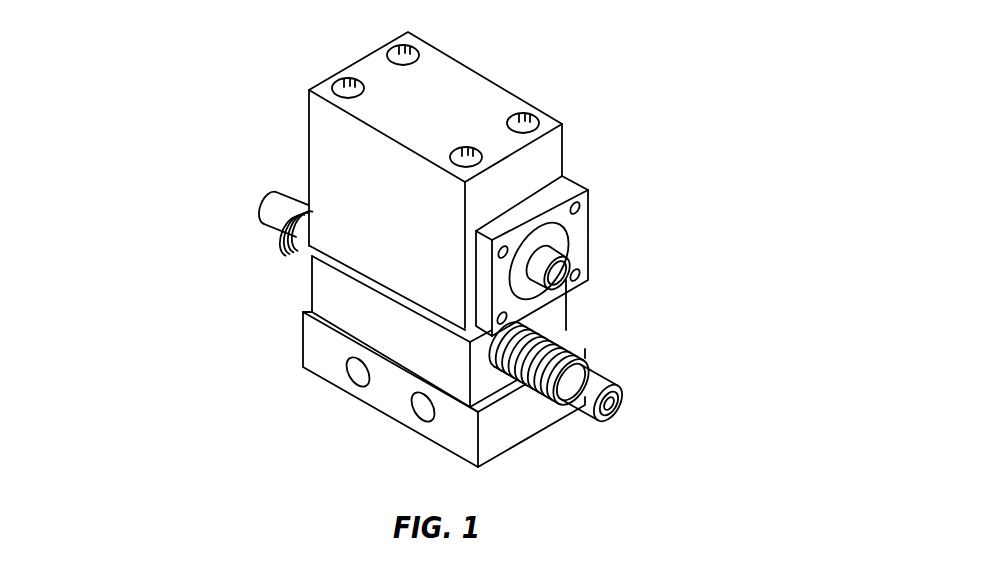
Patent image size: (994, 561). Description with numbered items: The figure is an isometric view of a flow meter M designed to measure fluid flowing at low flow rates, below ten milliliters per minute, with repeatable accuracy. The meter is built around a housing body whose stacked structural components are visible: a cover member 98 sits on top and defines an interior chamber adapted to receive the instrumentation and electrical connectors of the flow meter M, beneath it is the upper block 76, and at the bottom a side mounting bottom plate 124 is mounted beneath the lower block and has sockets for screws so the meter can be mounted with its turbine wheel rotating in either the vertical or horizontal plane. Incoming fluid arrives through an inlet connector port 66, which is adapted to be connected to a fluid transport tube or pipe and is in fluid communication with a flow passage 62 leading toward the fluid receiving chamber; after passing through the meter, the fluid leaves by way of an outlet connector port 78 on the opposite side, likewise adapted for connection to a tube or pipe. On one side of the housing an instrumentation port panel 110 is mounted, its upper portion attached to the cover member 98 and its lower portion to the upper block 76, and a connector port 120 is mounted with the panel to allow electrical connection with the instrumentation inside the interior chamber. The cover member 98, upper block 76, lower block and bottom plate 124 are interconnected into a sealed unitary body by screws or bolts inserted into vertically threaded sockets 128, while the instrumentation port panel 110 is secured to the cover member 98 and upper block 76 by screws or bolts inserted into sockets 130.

The flow meter M is at (518, 40).
The flow passage 62 is at (311, 293).
The inlet connector port 66 is at (581, 378).
The upper block 76 is at (298, 265).
The outlet connector port 78 is at (279, 195).
The cover member 98 is at (319, 136).
The instrumentation port panel 110 is at (584, 243).
The connector port 120 is at (597, 251).
The side mounting bottom plate 124 is at (493, 437).
The vertically threaded sockets 128 is at (402, 45).
The sockets 130 is at (499, 253).